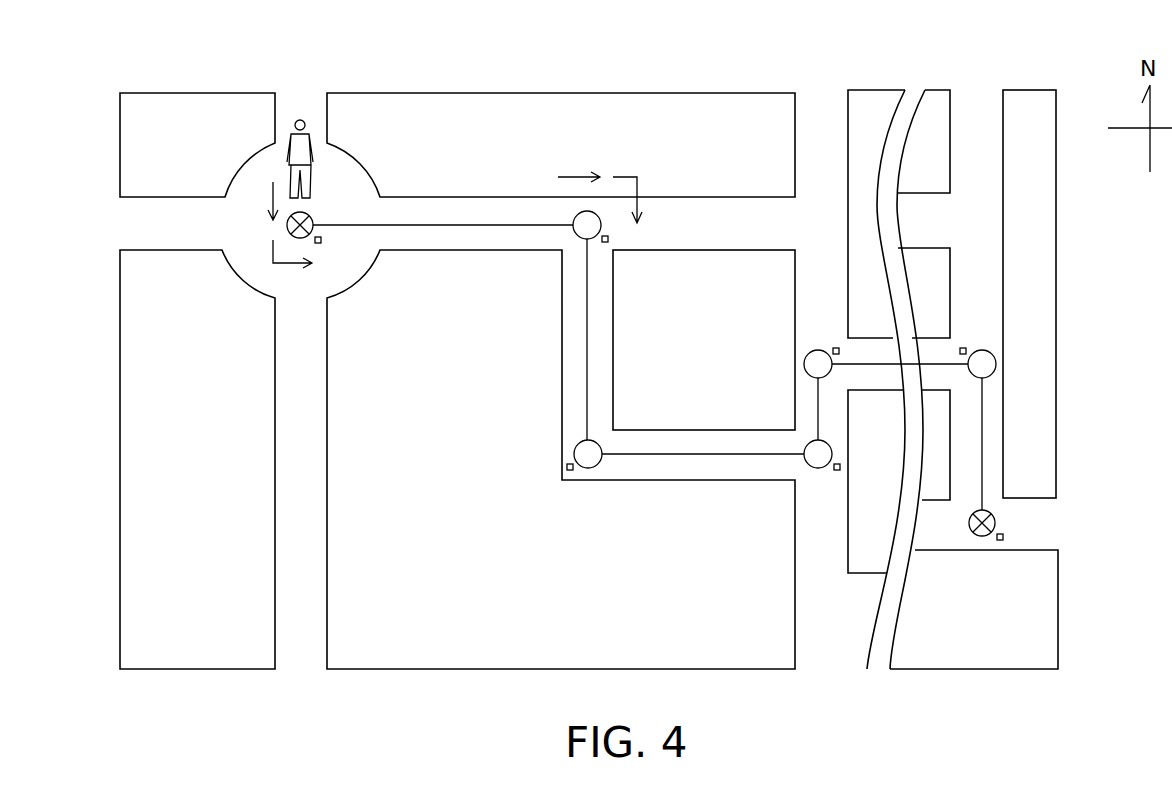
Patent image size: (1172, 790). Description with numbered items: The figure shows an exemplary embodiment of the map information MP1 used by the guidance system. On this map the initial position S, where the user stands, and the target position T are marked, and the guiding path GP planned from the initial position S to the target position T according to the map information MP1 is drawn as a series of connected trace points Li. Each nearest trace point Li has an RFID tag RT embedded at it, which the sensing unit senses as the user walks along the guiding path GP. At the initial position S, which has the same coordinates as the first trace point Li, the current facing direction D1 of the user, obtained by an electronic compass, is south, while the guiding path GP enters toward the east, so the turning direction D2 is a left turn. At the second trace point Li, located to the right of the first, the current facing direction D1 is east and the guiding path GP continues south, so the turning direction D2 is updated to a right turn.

The map information MP1 is at (1077, 55).
The initial position S is at (313, 220).
The target position T is at (997, 522).
The guiding path GP is at (615, 330).
The nearest trace point Li is at (808, 466).
The RFID tag RT is at (325, 240).
The current facing direction D1 is at (269, 189).
The turning direction D2 is at (292, 266).